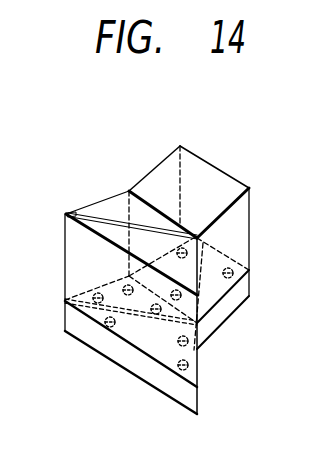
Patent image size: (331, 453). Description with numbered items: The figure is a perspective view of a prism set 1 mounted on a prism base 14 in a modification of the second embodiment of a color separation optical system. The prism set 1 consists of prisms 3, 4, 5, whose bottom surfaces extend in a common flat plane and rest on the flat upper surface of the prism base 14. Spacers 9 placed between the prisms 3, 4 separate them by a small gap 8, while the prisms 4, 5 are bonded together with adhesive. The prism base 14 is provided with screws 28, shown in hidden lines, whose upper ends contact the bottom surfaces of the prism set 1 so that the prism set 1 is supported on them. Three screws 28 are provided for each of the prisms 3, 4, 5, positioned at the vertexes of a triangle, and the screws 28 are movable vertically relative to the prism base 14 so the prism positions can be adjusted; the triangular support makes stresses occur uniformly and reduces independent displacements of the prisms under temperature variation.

The prism set 1 is at (234, 231).
The prism 3 is at (73, 244).
The prism 4 is at (98, 204).
The prism 5 is at (218, 180).
The gap 8 is at (117, 222).
The spacers 9 is at (69, 212).
The prism base 14 is at (233, 303).
The screws 28 is at (96, 306).